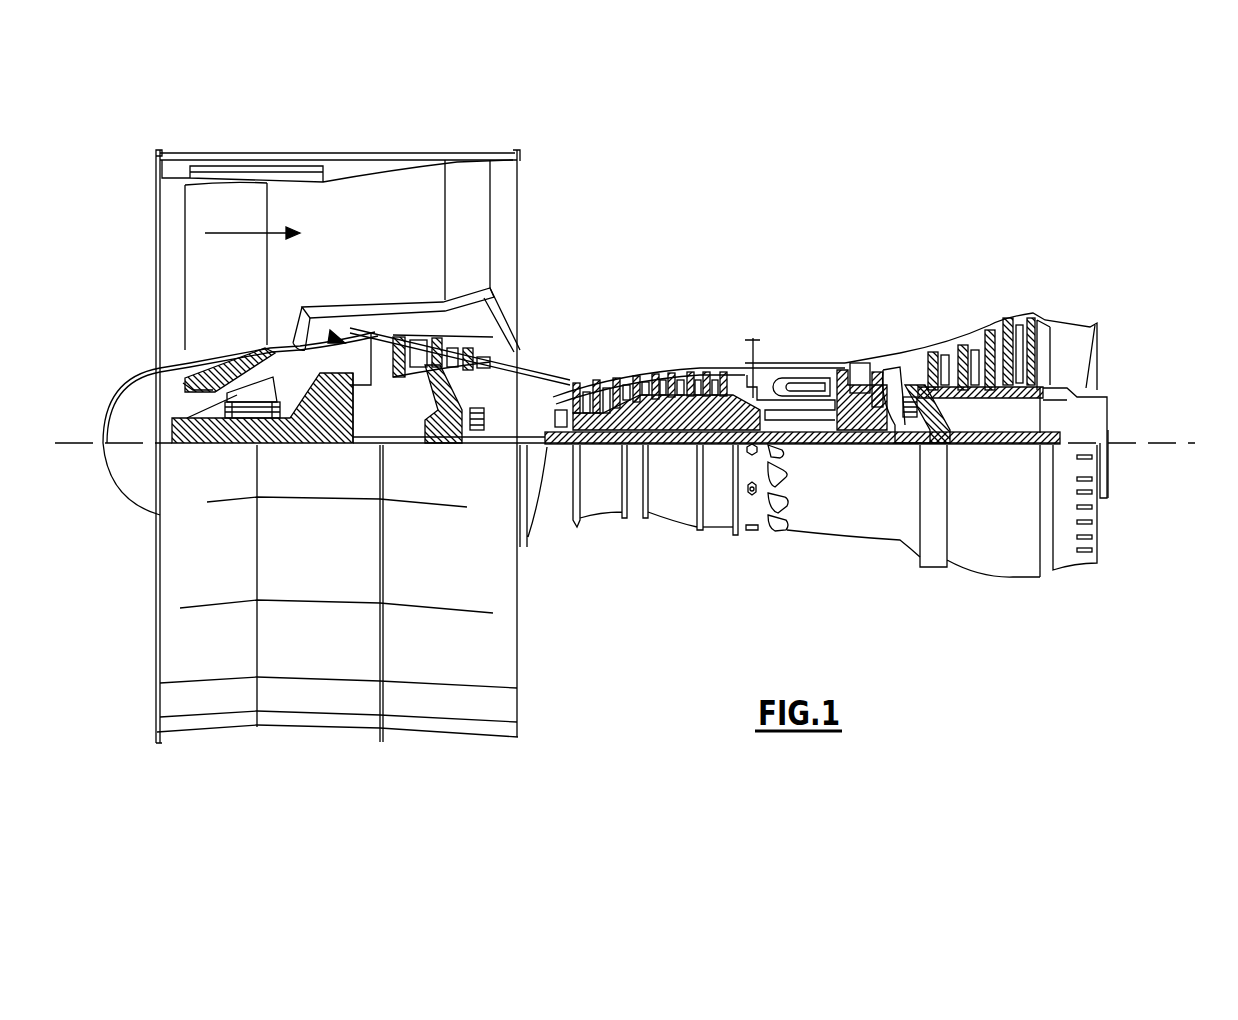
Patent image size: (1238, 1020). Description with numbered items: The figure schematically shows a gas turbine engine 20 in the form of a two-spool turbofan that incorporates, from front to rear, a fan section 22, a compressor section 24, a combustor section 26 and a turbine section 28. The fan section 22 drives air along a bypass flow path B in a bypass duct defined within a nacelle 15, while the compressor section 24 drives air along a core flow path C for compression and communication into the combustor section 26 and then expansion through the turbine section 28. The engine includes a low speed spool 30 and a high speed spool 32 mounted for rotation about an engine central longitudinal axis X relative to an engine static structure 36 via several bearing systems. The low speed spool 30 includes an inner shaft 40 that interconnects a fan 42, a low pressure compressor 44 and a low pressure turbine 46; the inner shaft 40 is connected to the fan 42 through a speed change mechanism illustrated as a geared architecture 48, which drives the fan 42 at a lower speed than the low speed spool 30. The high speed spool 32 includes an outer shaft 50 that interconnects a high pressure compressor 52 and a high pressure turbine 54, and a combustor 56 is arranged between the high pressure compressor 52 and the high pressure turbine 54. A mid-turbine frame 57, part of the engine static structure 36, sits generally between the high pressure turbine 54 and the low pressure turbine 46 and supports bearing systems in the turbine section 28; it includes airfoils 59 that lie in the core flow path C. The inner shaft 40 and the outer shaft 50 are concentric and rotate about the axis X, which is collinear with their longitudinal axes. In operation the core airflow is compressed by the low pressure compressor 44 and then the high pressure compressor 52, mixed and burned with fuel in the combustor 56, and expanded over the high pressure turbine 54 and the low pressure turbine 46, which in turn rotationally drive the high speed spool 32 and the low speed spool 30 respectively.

The nacelle 15 is at (339, 160).
The gas turbine engine 20 is at (795, 210).
The fan section 22 is at (268, 153).
The compressor section 24 is at (567, 352).
The combustor section 26 is at (792, 340).
The turbine section 28 is at (939, 302).
The low speed spool 30 is at (675, 448).
The high speed spool 32 is at (724, 388).
The engine static structure 36 is at (715, 530).
The inner shaft 40 is at (546, 470).
The fan 42 is at (240, 287).
The low pressure compressor 44 is at (437, 350).
The low pressure turbine 46 is at (983, 330).
The geared architecture 48 is at (345, 425).
The outer shaft 50 is at (797, 427).
The high pressure compressor 52 is at (656, 412).
The high pressure turbine 54 is at (857, 365).
The combustor 56 is at (790, 383).
The mid-turbine frame 57 is at (898, 352).
The airfoils 59 is at (897, 378).
The bypass flow path B is at (243, 232).
The core flow path C is at (333, 337).
The engine central longitudinal axis X is at (1190, 443).